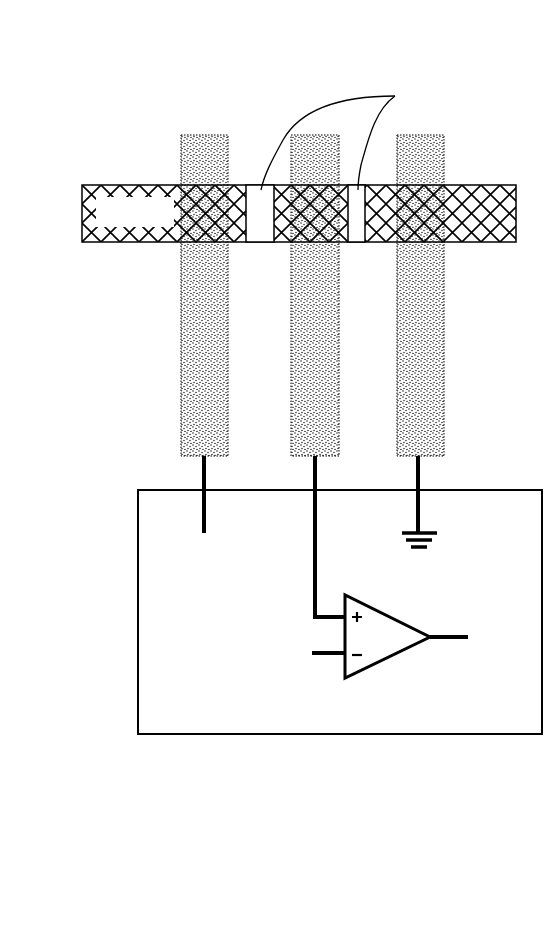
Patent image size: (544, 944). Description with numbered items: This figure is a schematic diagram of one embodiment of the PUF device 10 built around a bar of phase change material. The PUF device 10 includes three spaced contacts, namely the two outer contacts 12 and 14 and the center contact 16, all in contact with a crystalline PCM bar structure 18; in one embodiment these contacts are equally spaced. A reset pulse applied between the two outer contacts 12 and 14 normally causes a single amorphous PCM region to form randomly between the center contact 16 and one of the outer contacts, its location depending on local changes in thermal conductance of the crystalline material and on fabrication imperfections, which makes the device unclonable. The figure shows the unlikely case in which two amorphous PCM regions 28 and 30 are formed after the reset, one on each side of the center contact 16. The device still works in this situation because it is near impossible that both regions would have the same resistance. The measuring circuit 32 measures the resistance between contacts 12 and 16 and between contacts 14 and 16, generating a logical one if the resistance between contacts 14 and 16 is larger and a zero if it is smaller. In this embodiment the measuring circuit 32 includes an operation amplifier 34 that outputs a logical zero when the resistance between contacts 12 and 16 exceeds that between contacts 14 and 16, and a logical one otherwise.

The PUF device 10 is at (333, 44).
The outer contact 12 is at (220, 427).
The outer contact 14 is at (435, 427).
The center contact 16 is at (329, 427).
The PCM bar structure 18 is at (497, 222).
The amorphous PCM region 28 is at (258, 228).
The amorphous PCM region 30 is at (358, 228).
The measuring circuit 32 is at (205, 709).
The operation amplifier 34 is at (396, 649).